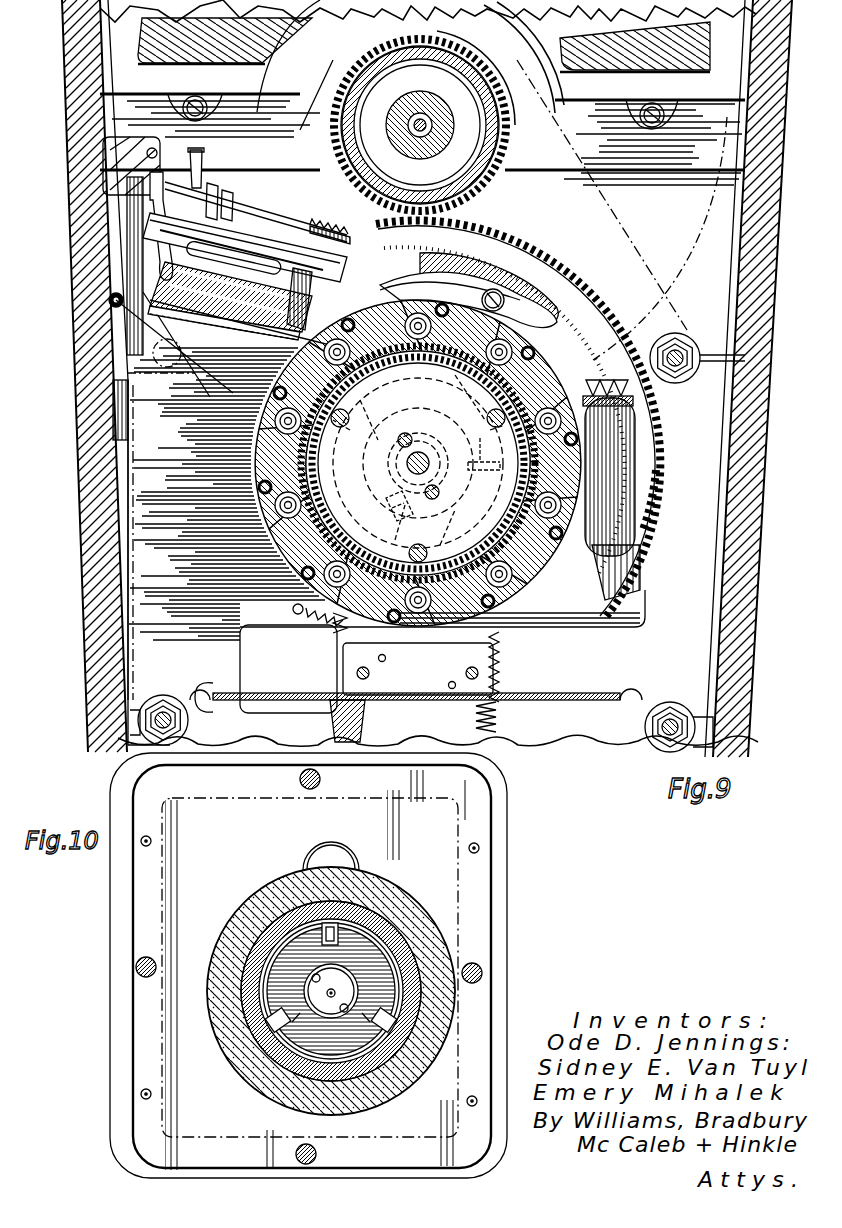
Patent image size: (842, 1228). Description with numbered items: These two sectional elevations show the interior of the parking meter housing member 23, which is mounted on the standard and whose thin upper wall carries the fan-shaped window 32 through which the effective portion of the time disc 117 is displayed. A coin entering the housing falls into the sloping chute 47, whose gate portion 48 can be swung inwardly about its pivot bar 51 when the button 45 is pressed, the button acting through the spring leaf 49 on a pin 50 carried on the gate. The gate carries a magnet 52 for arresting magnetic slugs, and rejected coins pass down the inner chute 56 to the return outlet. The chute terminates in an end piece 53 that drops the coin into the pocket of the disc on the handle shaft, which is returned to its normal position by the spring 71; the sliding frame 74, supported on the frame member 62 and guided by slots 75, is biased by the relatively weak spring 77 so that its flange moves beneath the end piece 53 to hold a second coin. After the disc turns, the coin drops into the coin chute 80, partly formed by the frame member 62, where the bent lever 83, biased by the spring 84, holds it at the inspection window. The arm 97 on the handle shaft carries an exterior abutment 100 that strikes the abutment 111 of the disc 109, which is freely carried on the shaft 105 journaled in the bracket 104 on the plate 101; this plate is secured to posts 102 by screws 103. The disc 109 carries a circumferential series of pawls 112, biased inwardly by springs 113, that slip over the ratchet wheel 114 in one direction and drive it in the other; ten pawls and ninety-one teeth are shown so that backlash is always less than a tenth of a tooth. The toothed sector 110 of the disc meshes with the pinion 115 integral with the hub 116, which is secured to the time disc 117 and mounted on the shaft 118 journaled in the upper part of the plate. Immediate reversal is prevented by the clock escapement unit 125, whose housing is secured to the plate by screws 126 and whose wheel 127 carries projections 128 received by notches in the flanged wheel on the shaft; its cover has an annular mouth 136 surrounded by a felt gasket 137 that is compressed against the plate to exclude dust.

In FIG. 9, the housing member 23 is at (72, 282).
In FIG. 9, the window 32 is at (262, 70).
In FIG. 9, the button 45 is at (190, 178).
In FIG. 9, the chute 47 is at (128, 241).
In FIG. 9, the gate portion 48 is at (150, 330).
In FIG. 9, the spring leaf 49 is at (165, 215).
In FIG. 9, the pin 50 is at (103, 140).
In FIG. 9, the pivot bar 51 is at (285, 240).
In FIG. 9, the magnet 52 is at (305, 338).
In FIG. 9, the end piece 53 is at (510, 303).
In FIG. 9, the chute 56 is at (133, 464).
In FIG. 9, the frame member 62 is at (640, 606).
In FIG. 9, the spring 71 is at (500, 660).
In FIG. 9, the sliding frame 74 is at (638, 402).
In FIG. 9, the slots 75 is at (600, 420).
In FIG. 9, the spring 77 is at (630, 388).
In FIG. 9, the coin chute 80 is at (490, 725).
In FIG. 9, the bent lever 83 is at (330, 718).
In FIG. 9, the spring 84 is at (296, 607).
In FIG. 9, the arm 97 is at (390, 480).
In FIG. 9, the exterior abutment 100 is at (415, 526).
In FIG. 9, the plate 101 is at (630, 230).
In FIG. 9, the posts 102 is at (170, 700).
In FIG. 9, the screws 103 is at (138, 722).
In FIG. 9, the bracket 104 is at (500, 637).
In FIG. 9, the shaft 105 is at (408, 463).
In FIG. 9, the disc 109 is at (615, 560).
In FIG. 9, the sector 110 is at (647, 522).
In FIG. 9, the abutment 111 is at (478, 470).
In FIG. 9, the pawls 112 is at (395, 325).
In FIG. 9, the springs 113 is at (552, 382).
In FIG. 9, the ratchet wheel 114 is at (432, 402).
In FIG. 9, the pinion 115 is at (470, 45).
In FIG. 9, the hub 116 is at (505, 228).
In FIG. 9, the time disc 117 is at (675, 270).
In FIG. 9, the shaft 118 is at (420, 135).
In FIG. 10, the clock escapement unit 125 is at (162, 1026).
In FIG. 10, the screws 126 is at (321, 778).
In FIG. 10, the wheel 127 is at (306, 995).
In FIG. 10, the projections 128 is at (375, 905).
In FIG. 10, the annular mouth 136 is at (255, 1062).
In FIG. 10, the felt gasket 137 is at (268, 1085).